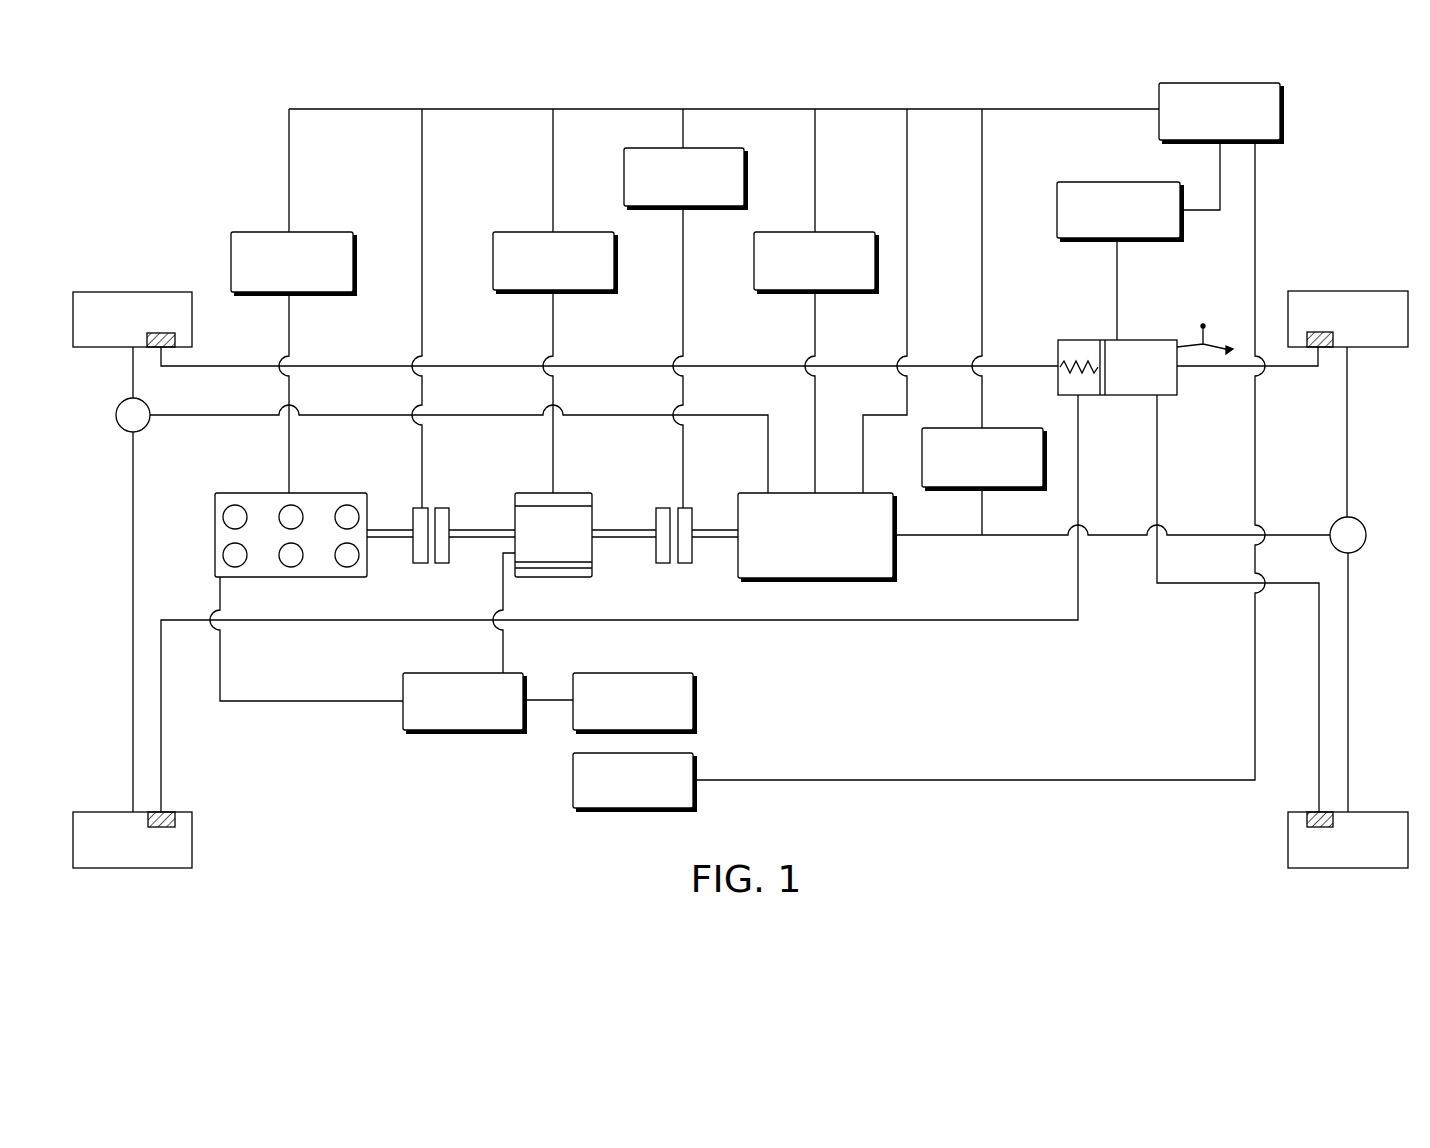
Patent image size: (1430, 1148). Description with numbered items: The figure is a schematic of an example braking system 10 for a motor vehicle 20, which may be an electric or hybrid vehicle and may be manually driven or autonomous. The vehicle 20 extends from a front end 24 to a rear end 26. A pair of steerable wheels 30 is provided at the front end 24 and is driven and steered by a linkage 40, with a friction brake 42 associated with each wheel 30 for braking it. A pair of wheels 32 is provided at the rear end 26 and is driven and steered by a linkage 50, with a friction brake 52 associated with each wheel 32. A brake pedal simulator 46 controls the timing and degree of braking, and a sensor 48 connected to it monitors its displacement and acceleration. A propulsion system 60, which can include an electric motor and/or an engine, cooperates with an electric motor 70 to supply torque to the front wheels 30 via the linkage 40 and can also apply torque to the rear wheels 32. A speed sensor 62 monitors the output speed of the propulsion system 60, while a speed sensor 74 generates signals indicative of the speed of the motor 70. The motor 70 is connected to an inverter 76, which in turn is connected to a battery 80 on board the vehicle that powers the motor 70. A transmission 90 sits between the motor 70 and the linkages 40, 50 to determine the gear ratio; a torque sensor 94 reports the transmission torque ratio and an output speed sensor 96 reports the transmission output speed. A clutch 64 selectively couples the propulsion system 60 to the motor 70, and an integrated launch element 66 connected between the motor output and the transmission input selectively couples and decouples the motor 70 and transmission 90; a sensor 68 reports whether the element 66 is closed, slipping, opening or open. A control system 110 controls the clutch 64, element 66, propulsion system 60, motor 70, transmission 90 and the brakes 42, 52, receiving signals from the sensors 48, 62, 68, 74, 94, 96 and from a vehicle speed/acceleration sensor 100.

The braking system 10 is at (1362, 142).
The motor vehicle 20 is at (112, 747).
The front end 24 is at (127, 893).
The rear end 26 is at (1363, 893).
The steerable wheels 30 is at (134, 290).
The rear wheels 32 is at (1348, 291).
The linkage 40 is at (113, 447).
The friction brake 42 is at (175, 338).
The brake pedal simulator 46 is at (1148, 340).
The sensor 48 is at (1118, 182).
The linkage 50 is at (1370, 562).
The friction brake 52 is at (1317, 332).
The propulsion system 60 is at (239, 473).
The speed sensor 62 is at (252, 232).
The clutch 64 is at (449, 490).
The integrated launch element 66 is at (686, 581).
The sensor 68 is at (623, 177).
The electric motor 70 is at (591, 473).
The speed sensor 74 is at (517, 232).
The inverter 76 is at (462, 732).
The battery 80 is at (695, 700).
The transmission 90 is at (895, 557).
The torque sensor 94 is at (786, 232).
The output speed sensor 96 is at (1025, 428).
The vehicle speed/acceleration sensor 100 is at (573, 778).
The control system 110 is at (1282, 113).